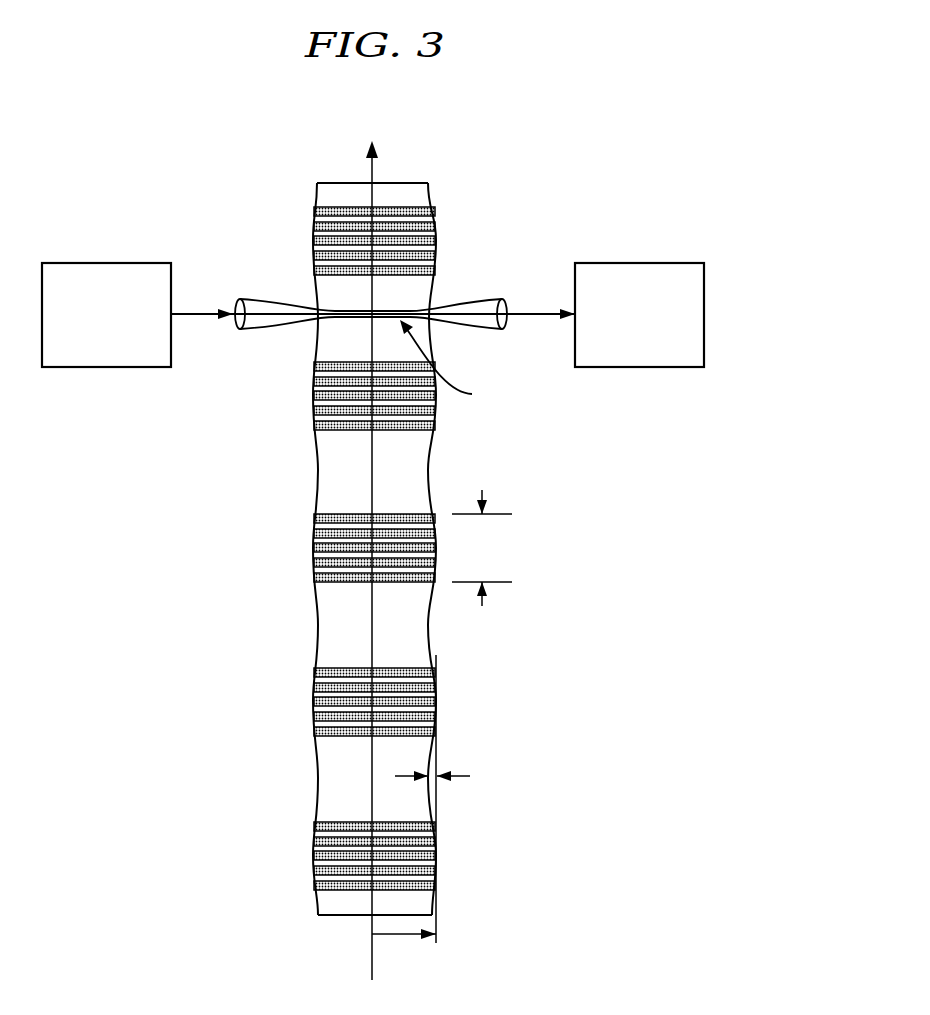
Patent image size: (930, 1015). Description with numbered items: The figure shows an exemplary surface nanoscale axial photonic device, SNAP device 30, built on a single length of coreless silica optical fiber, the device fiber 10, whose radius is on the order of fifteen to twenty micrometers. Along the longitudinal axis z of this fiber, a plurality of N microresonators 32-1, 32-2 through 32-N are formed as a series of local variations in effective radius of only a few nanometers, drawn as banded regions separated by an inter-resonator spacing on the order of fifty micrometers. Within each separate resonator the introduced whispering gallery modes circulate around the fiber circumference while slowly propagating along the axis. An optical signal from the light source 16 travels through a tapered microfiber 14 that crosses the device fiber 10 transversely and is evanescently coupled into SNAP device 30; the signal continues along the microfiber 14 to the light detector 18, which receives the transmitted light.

The device fiber 10 is at (326, 905).
The microfiber 14 is at (244, 300).
The light source 16 is at (93, 263).
The light detector 18 is at (657, 263).
The SNAP device 30 is at (205, 670).
The microresonator 32-1 is at (425, 287).
The microresonator 32-2 is at (331, 468).
The microresonator 32-N is at (331, 791).